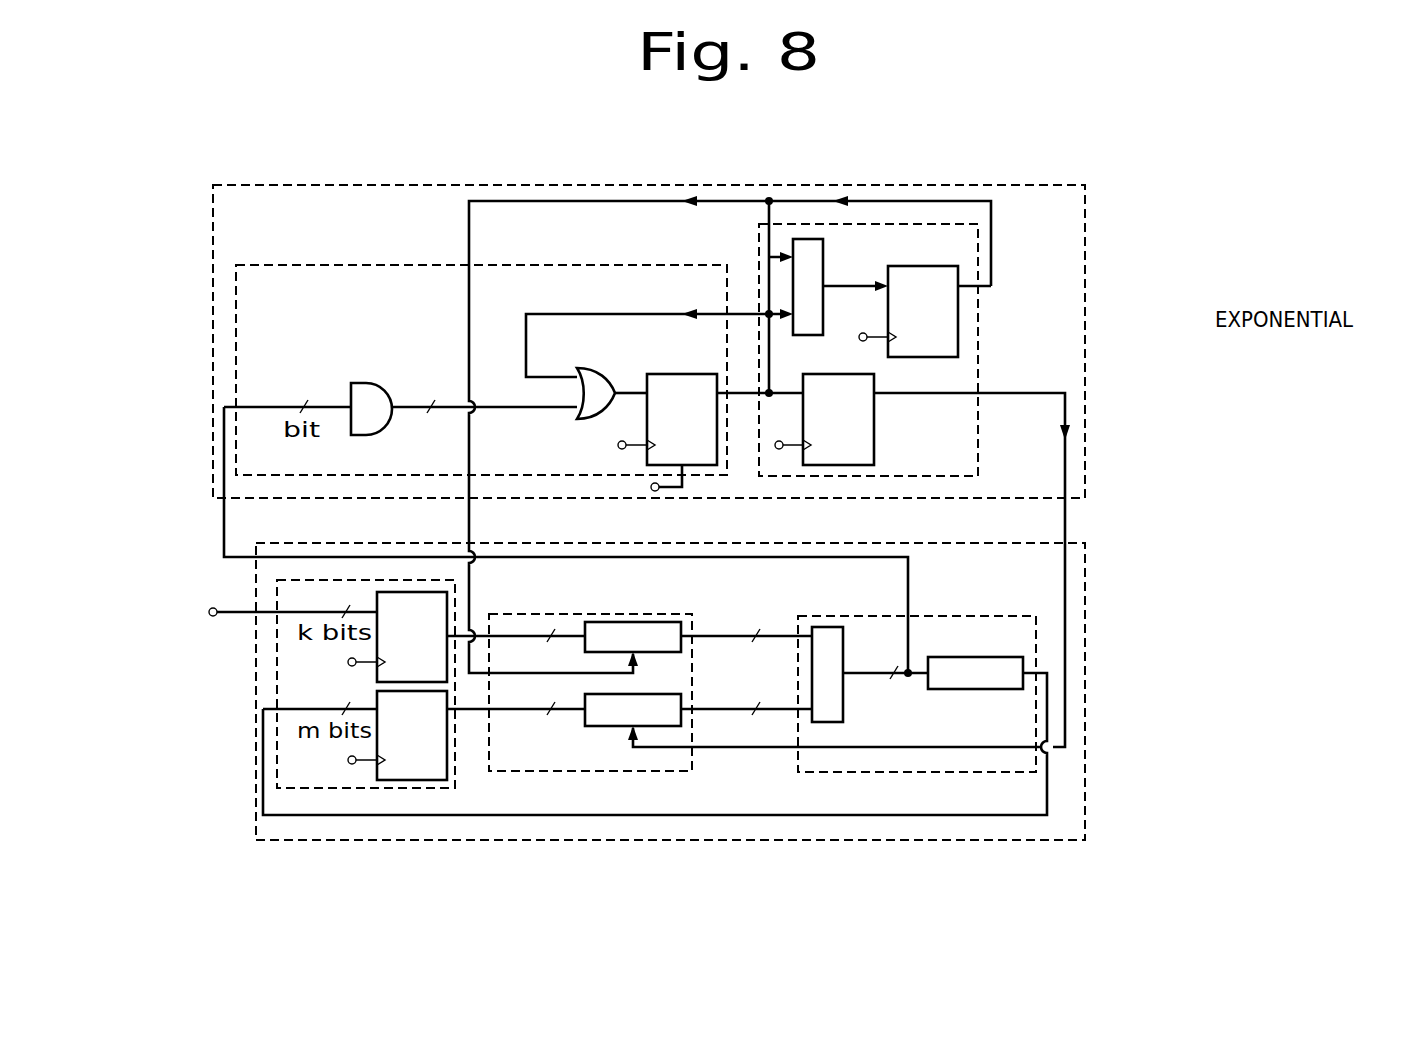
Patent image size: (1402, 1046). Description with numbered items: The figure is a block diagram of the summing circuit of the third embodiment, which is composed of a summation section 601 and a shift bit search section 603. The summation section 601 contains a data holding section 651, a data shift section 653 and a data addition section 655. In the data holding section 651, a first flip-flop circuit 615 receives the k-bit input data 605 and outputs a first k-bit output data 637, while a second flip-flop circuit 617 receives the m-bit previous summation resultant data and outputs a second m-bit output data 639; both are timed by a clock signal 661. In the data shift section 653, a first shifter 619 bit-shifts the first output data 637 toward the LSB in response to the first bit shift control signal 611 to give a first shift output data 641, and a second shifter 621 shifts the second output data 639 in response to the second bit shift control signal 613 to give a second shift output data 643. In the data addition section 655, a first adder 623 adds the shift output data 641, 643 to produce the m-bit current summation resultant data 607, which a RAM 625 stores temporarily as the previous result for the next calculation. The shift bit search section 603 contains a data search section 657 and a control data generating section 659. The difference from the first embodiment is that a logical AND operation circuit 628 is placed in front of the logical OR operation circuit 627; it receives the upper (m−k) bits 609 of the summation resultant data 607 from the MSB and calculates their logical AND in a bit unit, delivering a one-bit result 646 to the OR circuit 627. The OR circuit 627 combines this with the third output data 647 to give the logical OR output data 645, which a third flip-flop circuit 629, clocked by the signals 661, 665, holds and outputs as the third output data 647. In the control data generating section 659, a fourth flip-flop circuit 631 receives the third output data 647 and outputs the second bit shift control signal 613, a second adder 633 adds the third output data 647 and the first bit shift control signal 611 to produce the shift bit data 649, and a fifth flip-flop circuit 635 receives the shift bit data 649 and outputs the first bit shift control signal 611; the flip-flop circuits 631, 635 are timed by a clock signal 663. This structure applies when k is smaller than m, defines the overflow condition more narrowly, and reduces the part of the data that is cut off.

The summation section 601 is at (256, 580).
The shift bit search section 603 is at (1085, 243).
The k-bit input data 605 is at (213, 618).
The summation resultant data 607 is at (918, 673).
The upper bits of summation resultant data 609 is at (908, 588).
The first bit shift control signal 611 is at (597, 201).
The second bit shift control signal 613 is at (1022, 393).
The first flip-flop circuit 615 is at (402, 592).
The second flip-flop circuit 617 is at (407, 780).
The first shifter 619 is at (620, 622).
The second shifter 621 is at (608, 726).
The first adder 623 is at (826, 722).
The RAM 625 is at (970, 689).
The logical OR operation circuit 627 is at (578, 370).
The logical AND operation circuit 628 is at (372, 383).
The third flip-flop circuit 629 is at (680, 374).
The fourth flip-flop circuit 631 is at (874, 430).
The second adder 633 is at (801, 239).
The fifth flip-flop circuit 635 is at (960, 328).
The first output data 637 is at (518, 637).
The second output data 639 is at (472, 713).
The first shift output data 641 is at (778, 637).
The second shift output data 643 is at (683, 711).
The logical OR output data 645 is at (619, 390).
The logical AND output data 646 is at (432, 407).
The third output data 647 is at (745, 393).
The shift bit data 649 is at (848, 286).
The data holding section 651 is at (263, 718).
The data shift section 653 is at (542, 772).
The data addition section 655 is at (918, 772).
The data search section 657 is at (236, 296).
The control data generating section 659 is at (930, 224).
The clock signal 661 is at (348, 662).
The clock signal 663 is at (861, 333).
The clock signal 665 is at (652, 490).